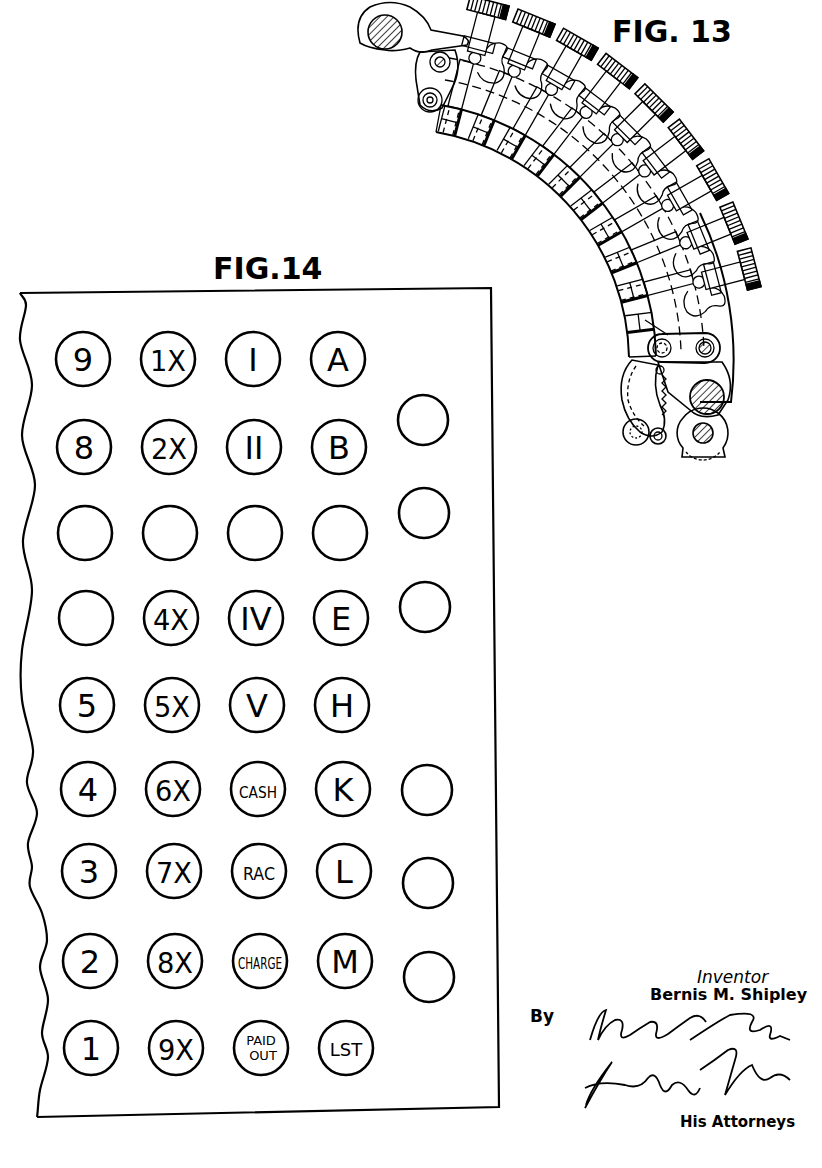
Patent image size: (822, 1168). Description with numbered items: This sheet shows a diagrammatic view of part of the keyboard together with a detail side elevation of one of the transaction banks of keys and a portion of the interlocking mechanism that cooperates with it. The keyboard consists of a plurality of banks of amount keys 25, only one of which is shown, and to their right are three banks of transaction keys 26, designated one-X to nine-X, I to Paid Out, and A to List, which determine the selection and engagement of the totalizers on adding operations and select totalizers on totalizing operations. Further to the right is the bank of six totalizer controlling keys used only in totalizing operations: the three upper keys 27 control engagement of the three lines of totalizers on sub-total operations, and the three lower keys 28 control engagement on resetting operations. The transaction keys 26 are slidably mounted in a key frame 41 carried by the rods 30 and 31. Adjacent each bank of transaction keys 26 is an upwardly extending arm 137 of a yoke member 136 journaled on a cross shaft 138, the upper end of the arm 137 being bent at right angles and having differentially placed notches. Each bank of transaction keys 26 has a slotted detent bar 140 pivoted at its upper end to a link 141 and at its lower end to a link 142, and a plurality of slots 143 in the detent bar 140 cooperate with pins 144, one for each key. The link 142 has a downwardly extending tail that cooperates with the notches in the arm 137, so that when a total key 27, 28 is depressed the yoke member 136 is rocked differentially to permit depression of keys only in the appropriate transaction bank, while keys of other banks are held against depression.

In FIG. 14, the amount keys 25 is at (88, 602).
In FIG. 13, the transaction keys 26 is at (622, 144).
In FIG. 14, the transaction keys 26 is at (330, 509).
In FIG. 14, the upper totalizer controlling keys 27 is at (436, 437).
In FIG. 14, the lower totalizer controlling keys 28 is at (440, 812).
In FIG. 13, the rod 30 is at (712, 401).
In FIG. 13, the rod 31 is at (376, 48).
In FIG. 13, the key frame 41 is at (416, 30).
In FIG. 13, the yoke member 136 is at (702, 458).
In FIG. 13, the arm 137 is at (676, 440).
In FIG. 13, the cross shaft 138 is at (714, 433).
In FIG. 13, the slotted detent bar 140 is at (685, 325).
In FIG. 13, the link 141 is at (428, 88).
In FIG. 13, the link 142 is at (648, 364).
In FIG. 13, the slots 143 is at (616, 224).
In FIG. 13, the pins 144 is at (659, 182).